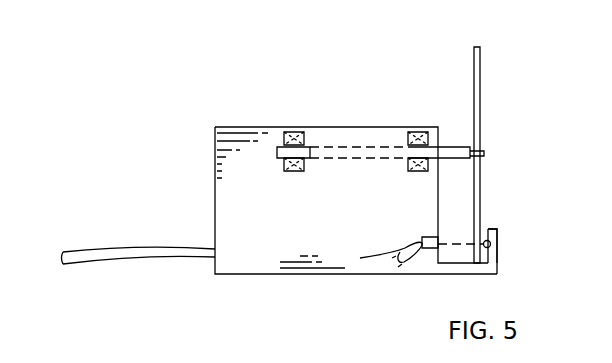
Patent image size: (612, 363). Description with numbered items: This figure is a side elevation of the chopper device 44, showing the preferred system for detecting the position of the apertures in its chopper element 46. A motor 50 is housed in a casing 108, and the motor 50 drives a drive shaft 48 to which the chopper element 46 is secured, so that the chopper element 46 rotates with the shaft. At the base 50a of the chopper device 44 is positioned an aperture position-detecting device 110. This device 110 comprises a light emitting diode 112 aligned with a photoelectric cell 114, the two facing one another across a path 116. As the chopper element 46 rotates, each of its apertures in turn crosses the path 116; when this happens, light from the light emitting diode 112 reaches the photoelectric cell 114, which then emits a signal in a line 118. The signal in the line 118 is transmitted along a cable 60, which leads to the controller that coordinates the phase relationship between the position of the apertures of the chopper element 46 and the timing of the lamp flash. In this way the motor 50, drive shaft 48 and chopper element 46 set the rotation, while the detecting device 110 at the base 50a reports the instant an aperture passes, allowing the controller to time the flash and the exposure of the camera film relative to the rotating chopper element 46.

The chopper device 44 is at (319, 62).
The chopper element 46 is at (482, 85).
The drive shaft 48 is at (362, 157).
The motor 50 is at (278, 230).
The base 50a is at (420, 265).
The cable 60 is at (110, 251).
The casing 108 is at (249, 127).
The aperture position-detecting device 110 is at (507, 226).
The light emitting diode 112 is at (497, 243).
The photoelectric cell 114 is at (421, 240).
The path 116 is at (447, 243).
The line 118 is at (398, 258).